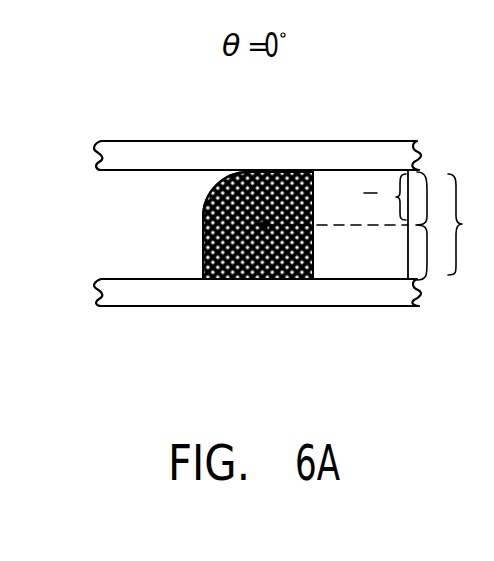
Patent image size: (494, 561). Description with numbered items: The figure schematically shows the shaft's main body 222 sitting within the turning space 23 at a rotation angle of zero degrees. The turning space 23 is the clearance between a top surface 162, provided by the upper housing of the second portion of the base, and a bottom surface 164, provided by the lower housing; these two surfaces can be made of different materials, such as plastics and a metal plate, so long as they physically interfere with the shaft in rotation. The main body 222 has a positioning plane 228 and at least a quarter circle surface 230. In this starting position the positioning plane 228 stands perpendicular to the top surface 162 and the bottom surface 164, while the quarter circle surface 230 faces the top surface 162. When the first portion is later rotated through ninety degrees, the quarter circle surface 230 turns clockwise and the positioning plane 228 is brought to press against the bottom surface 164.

The top surface 162 is at (96, 152).
The bottom surface 164 is at (96, 291).
The main body 222 is at (270, 240).
The positioning plane 228 is at (315, 248).
The quarter circle surface 230 is at (218, 183).
The turning space 23 is at (375, 225).